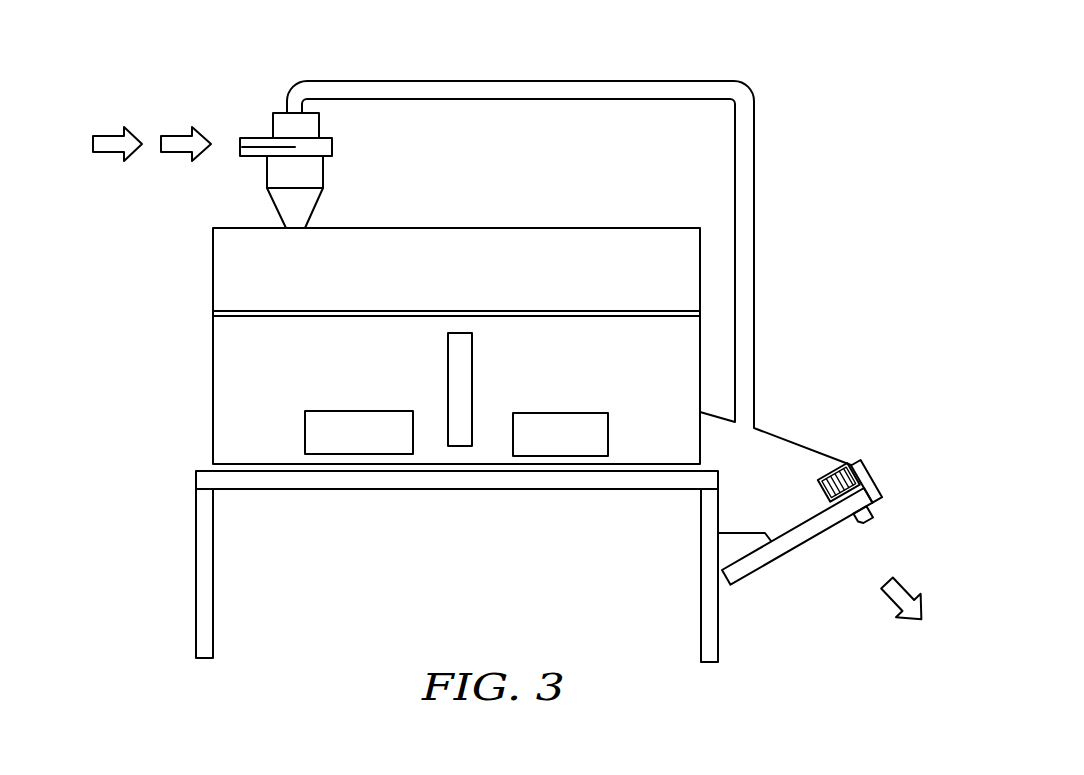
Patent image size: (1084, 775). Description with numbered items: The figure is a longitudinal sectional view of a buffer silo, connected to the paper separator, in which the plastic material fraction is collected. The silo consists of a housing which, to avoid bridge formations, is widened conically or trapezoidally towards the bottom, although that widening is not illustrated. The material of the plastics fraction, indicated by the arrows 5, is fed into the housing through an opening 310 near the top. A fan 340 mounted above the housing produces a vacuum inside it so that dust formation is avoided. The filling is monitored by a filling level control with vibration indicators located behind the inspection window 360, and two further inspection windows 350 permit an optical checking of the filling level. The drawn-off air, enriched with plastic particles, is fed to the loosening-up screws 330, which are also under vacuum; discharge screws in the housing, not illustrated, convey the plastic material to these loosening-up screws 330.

The material flow 5 is at (105, 152).
The opening 310 is at (298, 228).
The loosening-up screws 330 is at (808, 536).
The fan 340 is at (332, 147).
The inspection windows 350 is at (342, 411).
The inspection window 360 is at (472, 360).